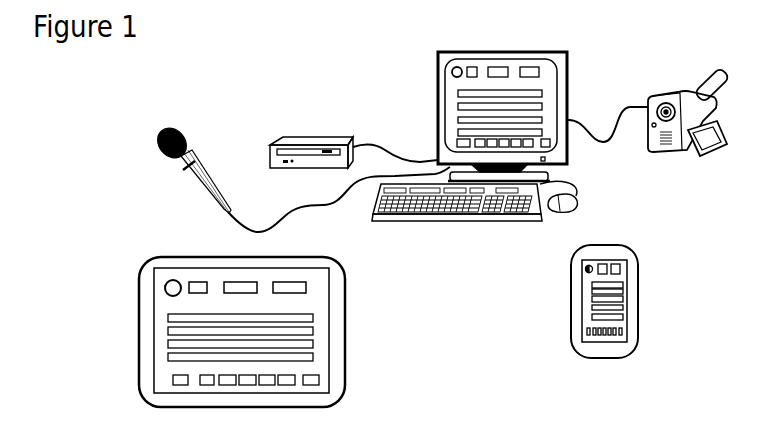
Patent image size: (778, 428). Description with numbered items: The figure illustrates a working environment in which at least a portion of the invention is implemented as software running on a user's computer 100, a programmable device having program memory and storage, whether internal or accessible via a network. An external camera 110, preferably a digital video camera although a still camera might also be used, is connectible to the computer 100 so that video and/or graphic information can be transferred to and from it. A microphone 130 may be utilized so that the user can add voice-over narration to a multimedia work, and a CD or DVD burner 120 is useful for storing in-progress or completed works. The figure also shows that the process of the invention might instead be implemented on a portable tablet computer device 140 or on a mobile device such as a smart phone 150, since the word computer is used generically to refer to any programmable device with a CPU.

The computer 100 is at (548, 51).
The external camera 110 is at (712, 68).
The CD or DVD burner 120 is at (276, 142).
The microphone 130 is at (177, 130).
The portable tablet computer device 140 is at (345, 347).
The smart phone 150 is at (639, 335).